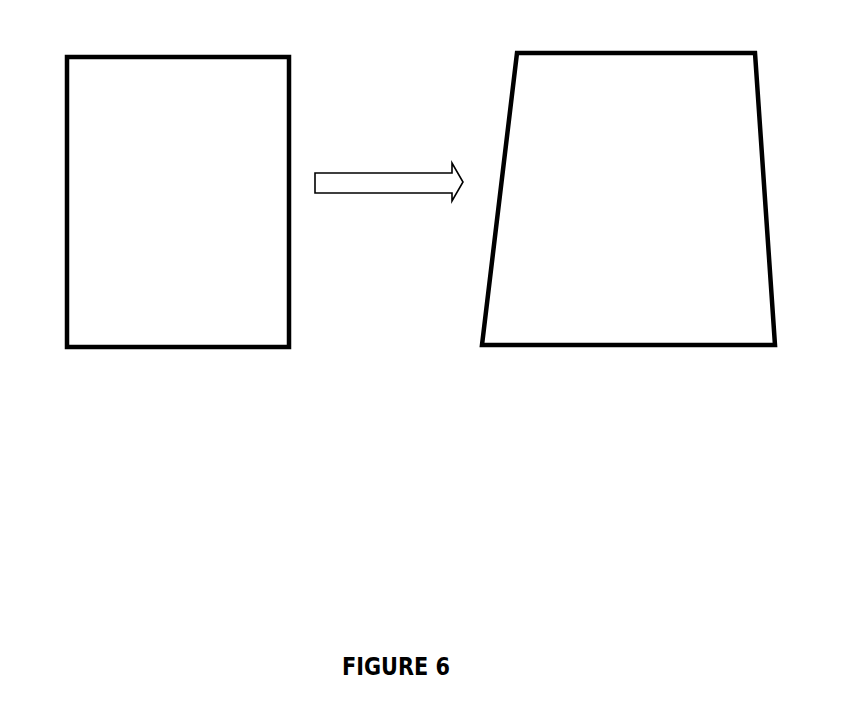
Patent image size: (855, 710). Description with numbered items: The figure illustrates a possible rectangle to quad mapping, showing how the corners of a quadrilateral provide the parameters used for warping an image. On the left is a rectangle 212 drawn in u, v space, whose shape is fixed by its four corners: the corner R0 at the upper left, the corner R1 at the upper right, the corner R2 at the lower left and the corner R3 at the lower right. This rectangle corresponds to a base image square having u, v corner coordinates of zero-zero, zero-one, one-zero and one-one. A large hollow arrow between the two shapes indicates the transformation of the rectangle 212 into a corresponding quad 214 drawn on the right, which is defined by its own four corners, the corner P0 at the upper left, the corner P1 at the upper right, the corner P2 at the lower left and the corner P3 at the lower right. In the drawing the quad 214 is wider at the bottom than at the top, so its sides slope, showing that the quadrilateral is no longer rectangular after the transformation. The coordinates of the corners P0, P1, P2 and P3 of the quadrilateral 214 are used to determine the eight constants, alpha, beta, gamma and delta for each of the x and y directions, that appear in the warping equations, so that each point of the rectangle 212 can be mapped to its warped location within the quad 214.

The rectangle 212 is at (178, 233).
The quad 214 is at (625, 237).
The corner R0 is at (38, 38).
The corner R1 is at (321, 38).
The corner R2 is at (35, 386).
The corner R3 is at (303, 386).
The corner P0 is at (460, 41).
The corner P1 is at (781, 41).
The corner P2 is at (463, 386).
The corner P3 is at (791, 386).